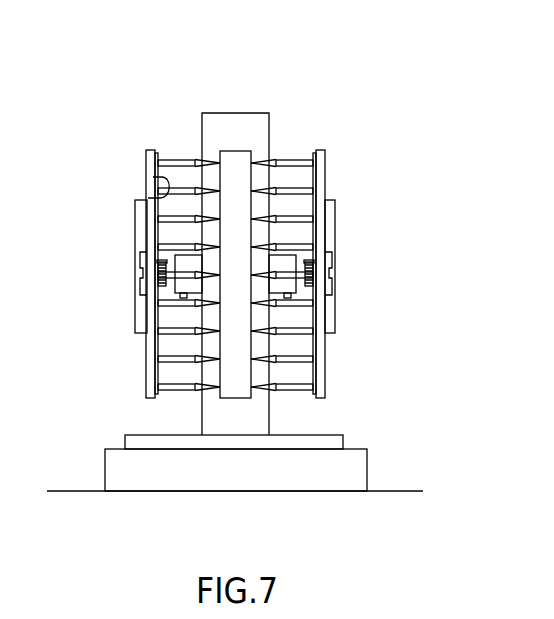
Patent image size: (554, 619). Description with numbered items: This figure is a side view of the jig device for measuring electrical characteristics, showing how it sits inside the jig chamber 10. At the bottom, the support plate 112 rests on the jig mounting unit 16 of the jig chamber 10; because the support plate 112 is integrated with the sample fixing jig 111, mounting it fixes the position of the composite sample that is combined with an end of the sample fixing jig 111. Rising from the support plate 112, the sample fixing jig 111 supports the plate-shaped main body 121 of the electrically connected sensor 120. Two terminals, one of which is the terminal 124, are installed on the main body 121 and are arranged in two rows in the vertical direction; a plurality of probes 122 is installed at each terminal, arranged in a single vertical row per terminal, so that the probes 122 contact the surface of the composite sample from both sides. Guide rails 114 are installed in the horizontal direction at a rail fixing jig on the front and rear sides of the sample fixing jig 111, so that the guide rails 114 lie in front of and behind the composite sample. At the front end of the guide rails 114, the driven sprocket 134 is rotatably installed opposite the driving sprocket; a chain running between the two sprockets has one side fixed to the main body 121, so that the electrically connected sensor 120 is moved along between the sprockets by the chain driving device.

The jig chamber 10 is at (392, 491).
The jig mounting unit 16 is at (363, 467).
The sample fixing jig 111 is at (252, 113).
The support plate 112 is at (334, 435).
The guide rails 114 is at (143, 258).
The electrically connected sensor 120 is at (184, 201).
The main body 121 is at (148, 165).
The probes 122 is at (177, 162).
The terminal 124 is at (148, 203).
The driven sprocket 134 is at (165, 288).